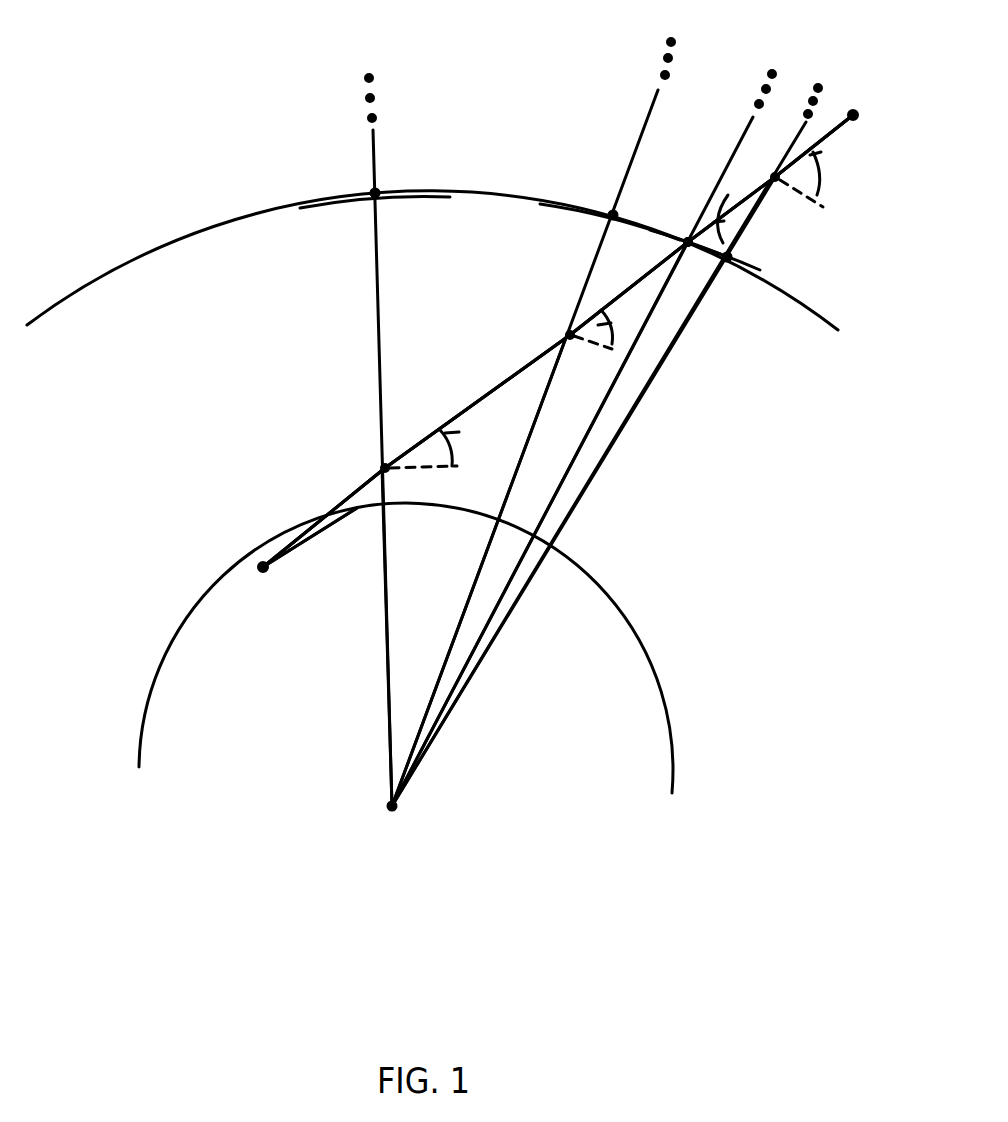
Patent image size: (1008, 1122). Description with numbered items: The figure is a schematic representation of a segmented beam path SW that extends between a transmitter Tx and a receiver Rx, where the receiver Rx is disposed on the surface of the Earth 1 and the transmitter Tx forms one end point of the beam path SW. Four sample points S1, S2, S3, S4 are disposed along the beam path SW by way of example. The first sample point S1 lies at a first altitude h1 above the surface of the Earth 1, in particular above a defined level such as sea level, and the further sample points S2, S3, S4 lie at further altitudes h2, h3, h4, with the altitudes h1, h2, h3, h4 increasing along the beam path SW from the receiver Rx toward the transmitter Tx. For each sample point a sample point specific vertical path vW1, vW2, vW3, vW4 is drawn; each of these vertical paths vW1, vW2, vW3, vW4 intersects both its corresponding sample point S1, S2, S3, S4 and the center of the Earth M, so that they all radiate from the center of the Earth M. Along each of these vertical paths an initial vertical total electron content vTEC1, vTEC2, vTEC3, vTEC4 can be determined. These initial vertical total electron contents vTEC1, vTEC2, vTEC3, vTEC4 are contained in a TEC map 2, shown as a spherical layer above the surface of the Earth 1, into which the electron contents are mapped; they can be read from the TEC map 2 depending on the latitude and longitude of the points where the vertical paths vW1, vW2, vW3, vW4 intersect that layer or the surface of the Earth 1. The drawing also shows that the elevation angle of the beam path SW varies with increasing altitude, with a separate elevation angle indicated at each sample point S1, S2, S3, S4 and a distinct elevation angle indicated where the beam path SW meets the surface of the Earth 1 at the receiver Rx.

The surface of the Earth 1 is at (657, 697).
The TEC map 2 is at (114, 266).
The center of the Earth M is at (394, 808).
The receiver Rx is at (258, 566).
The transmitter Tx is at (852, 113).
The beam path SW is at (358, 490).
The first sample point S1 is at (386, 466).
The second sample point S2 is at (568, 332).
The third sample point S3 is at (690, 250).
The fourth sample point S4 is at (782, 177).
The first altitude h1 is at (384, 497).
The second altitude h2 is at (526, 445).
The third altitude h3 is at (616, 377).
The fourth altitude h4 is at (620, 435).
The first sample point specific vertical path vW1 is at (375, 256).
The second sample point specific vertical path vW2 is at (651, 101).
The third sample point specific vertical path vW3 is at (745, 131).
The fourth sample point specific vertical path vW4 is at (747, 225).
The first initial vertical total electron content vTEC1 is at (375, 193).
The second initial vertical total electron content vTEC2 is at (611, 212).
The third initial vertical total electron content vTEC3 is at (690, 250).
The fourth initial vertical total electron content vTEC4 is at (728, 195).